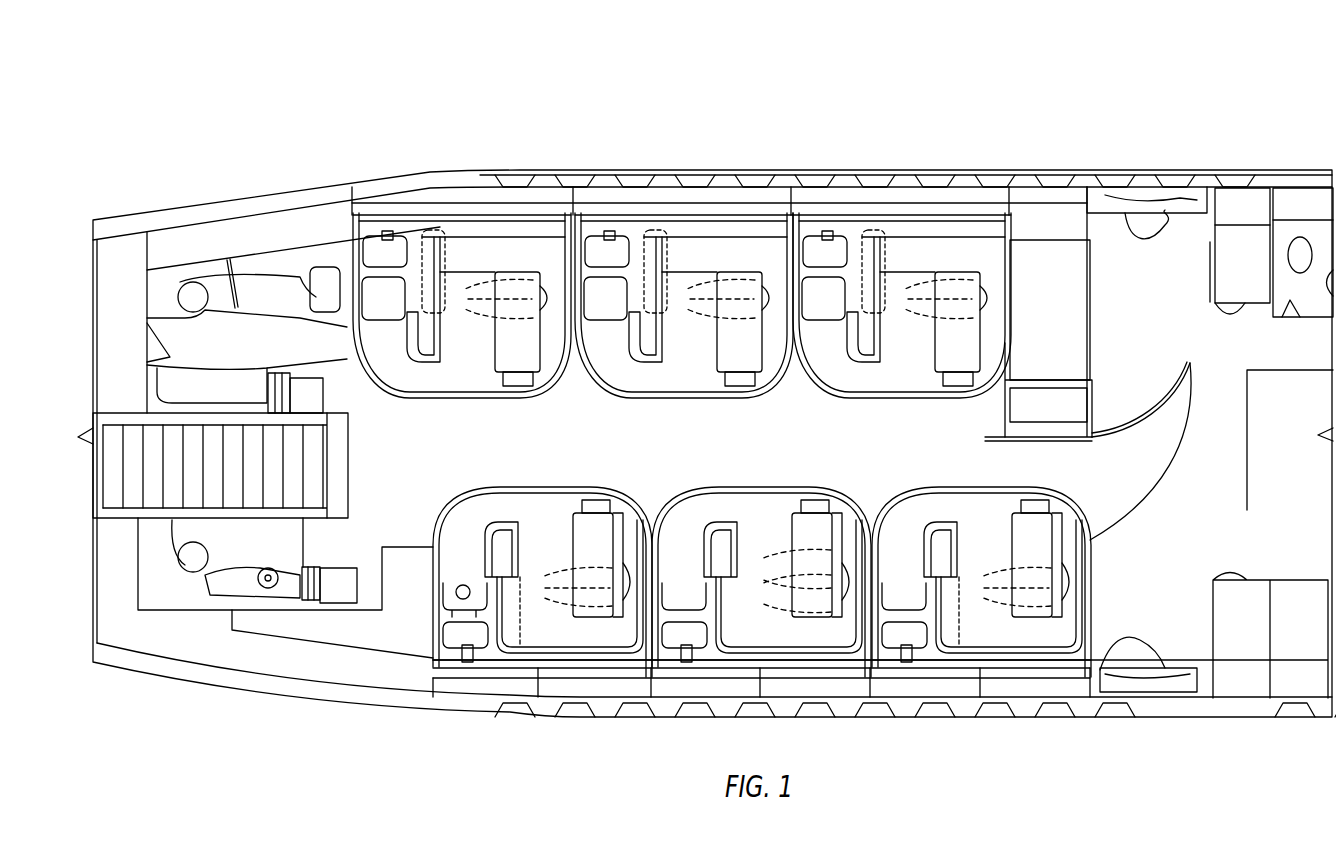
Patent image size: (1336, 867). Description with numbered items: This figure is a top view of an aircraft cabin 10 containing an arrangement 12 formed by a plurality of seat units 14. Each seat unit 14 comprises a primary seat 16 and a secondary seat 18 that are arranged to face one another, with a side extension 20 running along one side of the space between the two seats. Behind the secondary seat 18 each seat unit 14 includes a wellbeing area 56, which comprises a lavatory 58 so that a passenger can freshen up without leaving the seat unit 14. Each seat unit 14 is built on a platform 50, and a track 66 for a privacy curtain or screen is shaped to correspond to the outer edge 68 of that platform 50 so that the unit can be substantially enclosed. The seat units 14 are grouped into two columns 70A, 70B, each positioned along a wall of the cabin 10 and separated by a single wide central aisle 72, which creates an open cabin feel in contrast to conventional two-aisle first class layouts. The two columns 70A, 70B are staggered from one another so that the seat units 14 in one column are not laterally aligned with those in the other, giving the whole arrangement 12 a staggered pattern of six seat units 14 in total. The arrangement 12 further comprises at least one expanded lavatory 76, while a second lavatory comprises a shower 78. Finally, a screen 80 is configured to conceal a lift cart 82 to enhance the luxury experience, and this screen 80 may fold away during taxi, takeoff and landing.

The cabin 10 is at (440, 172).
The arrangement 12 is at (287, 141).
The seat unit 14 is at (696, 253).
The primary seat 16 is at (983, 280).
The secondary seat 18 is at (862, 332).
The side extension 20 is at (922, 250).
The platform 50 is at (467, 362).
The wellbeing area 56 is at (596, 252).
The lavatory 58 is at (614, 238).
The track 66 is at (898, 500).
The outer edge 68 is at (993, 500).
The column 70A is at (425, 607).
The column 70B is at (352, 232).
The central aisle 72 is at (680, 442).
The expanded lavatory 76 is at (163, 287).
The shower 78 is at (317, 297).
The screen 80 is at (1153, 403).
The lift cart 82 is at (1038, 407).